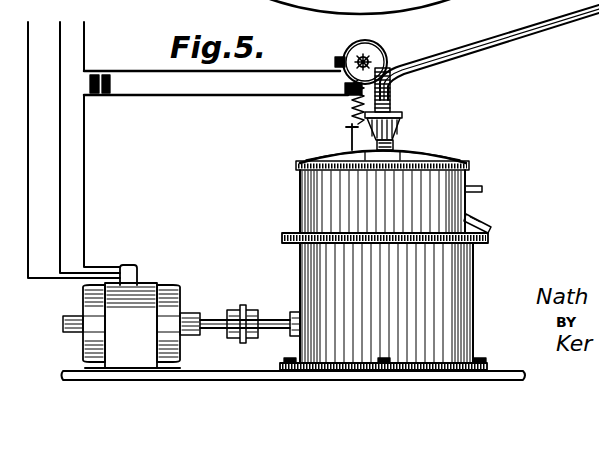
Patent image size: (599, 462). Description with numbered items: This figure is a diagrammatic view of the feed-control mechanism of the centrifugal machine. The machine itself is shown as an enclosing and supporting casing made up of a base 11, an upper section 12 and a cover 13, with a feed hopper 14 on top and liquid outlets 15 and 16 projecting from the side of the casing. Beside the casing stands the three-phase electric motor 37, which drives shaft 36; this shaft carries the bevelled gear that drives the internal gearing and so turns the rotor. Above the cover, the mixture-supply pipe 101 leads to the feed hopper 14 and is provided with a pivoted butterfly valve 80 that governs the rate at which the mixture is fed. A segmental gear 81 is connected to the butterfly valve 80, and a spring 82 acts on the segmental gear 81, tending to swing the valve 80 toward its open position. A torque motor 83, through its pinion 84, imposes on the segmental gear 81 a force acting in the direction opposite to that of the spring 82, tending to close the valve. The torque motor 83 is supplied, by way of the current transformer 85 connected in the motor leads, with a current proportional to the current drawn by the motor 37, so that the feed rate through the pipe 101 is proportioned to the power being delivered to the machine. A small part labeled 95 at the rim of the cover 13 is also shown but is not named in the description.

The base 11 is at (473, 284).
The upper section 12 is at (300, 200).
The cover 13 is at (438, 150).
The feed hopper 14 is at (350, 134).
The liquid outlet 15 is at (482, 190).
The liquid outlet 16 is at (490, 224).
The shaft 36 is at (262, 318).
The electric motor 37 is at (145, 290).
The butterfly valve 80 is at (392, 100).
The segmental gear 81 is at (400, 77).
The spring 82 is at (356, 108).
The torque motor 83 is at (350, 50).
The pinion 84 is at (372, 58).
The current transformer 85 is at (103, 72).
The cover flange 95 is at (466, 163).
The mixture-supply pipe 101 is at (392, 107).